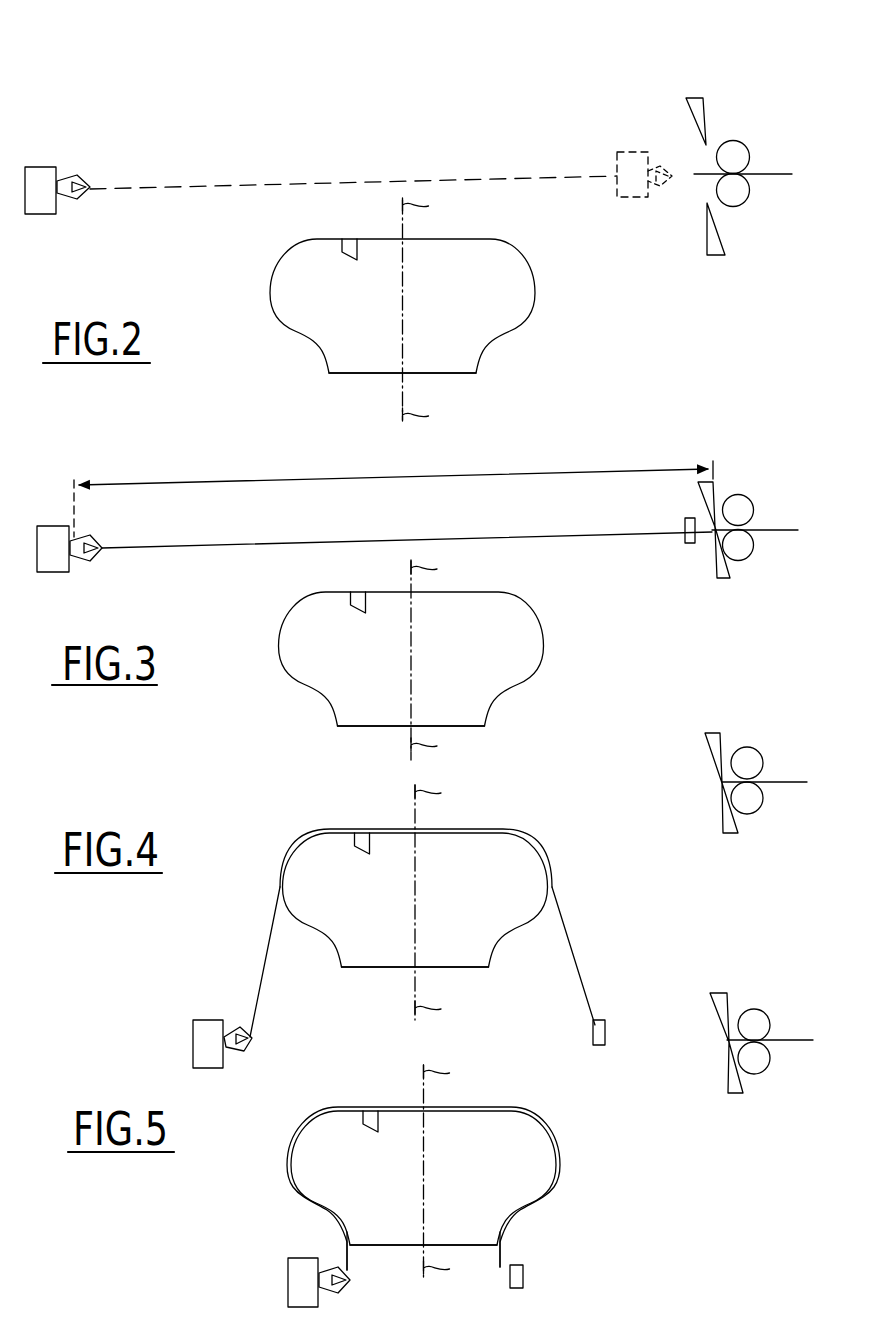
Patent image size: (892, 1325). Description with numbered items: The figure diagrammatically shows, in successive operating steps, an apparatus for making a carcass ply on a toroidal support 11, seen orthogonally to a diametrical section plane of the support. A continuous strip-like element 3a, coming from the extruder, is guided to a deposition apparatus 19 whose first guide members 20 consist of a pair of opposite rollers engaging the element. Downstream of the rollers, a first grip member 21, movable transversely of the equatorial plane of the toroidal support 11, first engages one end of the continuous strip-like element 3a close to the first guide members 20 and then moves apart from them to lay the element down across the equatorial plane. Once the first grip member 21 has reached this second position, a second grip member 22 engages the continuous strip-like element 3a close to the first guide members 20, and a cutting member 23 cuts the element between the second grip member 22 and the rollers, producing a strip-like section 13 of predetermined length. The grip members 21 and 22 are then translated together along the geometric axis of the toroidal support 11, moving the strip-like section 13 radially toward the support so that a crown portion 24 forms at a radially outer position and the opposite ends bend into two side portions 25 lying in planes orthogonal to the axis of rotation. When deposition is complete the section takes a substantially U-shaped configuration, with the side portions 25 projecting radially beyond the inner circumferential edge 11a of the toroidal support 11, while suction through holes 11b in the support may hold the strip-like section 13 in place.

In FIG. 2, the continuous strip-like element 3a is at (297, 186).
In FIG. 3, the continuous strip-like element 3a is at (788, 530).
In FIG. 4, the continuous strip-like element 3a is at (793, 782).
In FIG. 5, the continuous strip-like element 3a is at (803, 1038).
In FIG. 2, the toroidal support 11 is at (478, 369).
In FIG. 3, the toroidal support 11 is at (366, 727).
In FIG. 4, the toroidal support 11 is at (366, 958).
In FIG. 5, the toroidal support 11 is at (405, 1246).
In FIG. 2, the inner circumferential edge 11a is at (350, 377).
In FIG. 3, the inner circumferential edge 11a is at (480, 727).
In FIG. 4, the inner circumferential edge 11a is at (488, 968).
In FIG. 5, the inner circumferential edge 11a is at (354, 1247).
In FIG. 2, the holes 11b is at (346, 253).
In FIG. 3, the holes 11b is at (357, 603).
In FIG. 4, the holes 11b is at (360, 845).
In FIG. 5, the holes 11b is at (368, 1116).
In FIG. 3, the strip-like section 13 is at (548, 536).
In FIG. 4, the strip-like section 13 is at (424, 900).
In FIG. 2, the deposition apparatus 19 is at (730, 115).
In FIG. 3, the deposition apparatus 19 is at (764, 457).
In FIG. 4, the deposition apparatus 19 is at (744, 712).
In FIG. 5, the deposition apparatus 19 is at (742, 975).
In FIG. 2, the first guide members 20 is at (751, 195).
In FIG. 3, the first guide members 20 is at (752, 550).
In FIG. 4, the first guide members 20 is at (760, 800).
In FIG. 5, the first guide members 20 is at (760, 1060).
In FIG. 2, the first grip member 21 is at (42, 170).
In FIG. 3, the first grip member 21 is at (44, 525).
In FIG. 4, the first grip member 21 is at (197, 1021).
In FIG. 5, the first grip member 21 is at (292, 1268).
In FIG. 3, the second grip member 22 is at (688, 546).
In FIG. 4, the second grip member 22 is at (603, 1020).
In FIG. 5, the second grip member 22 is at (523, 1284).
In FIG. 2, the cutting member 23 is at (697, 143).
In FIG. 3, the cutting member 23 is at (718, 505).
In FIG. 4, the cutting member 23 is at (720, 798).
In FIG. 5, the cutting member 23 is at (722, 1050).
In FIG. 4, the crown portion 24 is at (477, 829).
In FIG. 5, the crown portion 24 is at (490, 1107).
In FIG. 4, the side portions 25 is at (269, 948).
In FIG. 5, the side portions 25 is at (287, 1167).